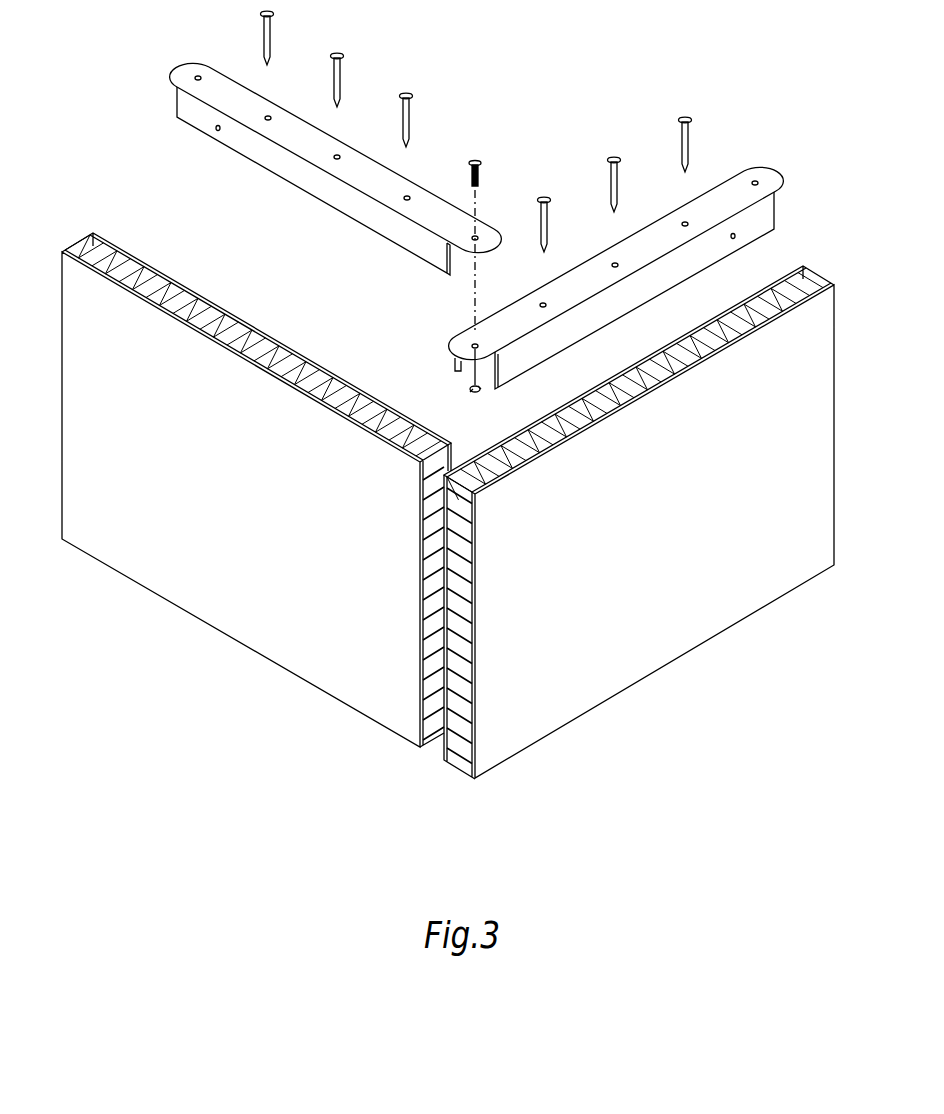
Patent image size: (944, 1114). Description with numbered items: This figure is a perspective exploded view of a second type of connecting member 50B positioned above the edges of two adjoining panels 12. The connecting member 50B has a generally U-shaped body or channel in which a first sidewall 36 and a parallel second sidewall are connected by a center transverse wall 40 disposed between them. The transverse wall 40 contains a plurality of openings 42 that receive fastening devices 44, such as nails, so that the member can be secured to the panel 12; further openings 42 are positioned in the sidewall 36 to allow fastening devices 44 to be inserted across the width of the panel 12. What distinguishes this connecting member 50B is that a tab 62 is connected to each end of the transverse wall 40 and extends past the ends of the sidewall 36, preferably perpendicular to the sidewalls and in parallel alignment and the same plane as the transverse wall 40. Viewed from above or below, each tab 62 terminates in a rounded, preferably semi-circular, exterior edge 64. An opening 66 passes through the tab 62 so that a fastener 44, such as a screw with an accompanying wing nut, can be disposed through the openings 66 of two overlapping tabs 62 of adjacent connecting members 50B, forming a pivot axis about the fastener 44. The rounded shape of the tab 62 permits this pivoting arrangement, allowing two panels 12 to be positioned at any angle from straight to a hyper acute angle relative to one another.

The panel 12 is at (259, 511).
The first sidewall 36 is at (193, 116).
The transverse wall 40 is at (372, 187).
The openings 42 is at (614, 262).
The fastening devices 44 is at (410, 113).
The second type of connecting member 50B is at (482, 220).
The tab 62 is at (192, 64).
The rounded exterior edge 64 is at (447, 349).
The opening 66 is at (479, 348).